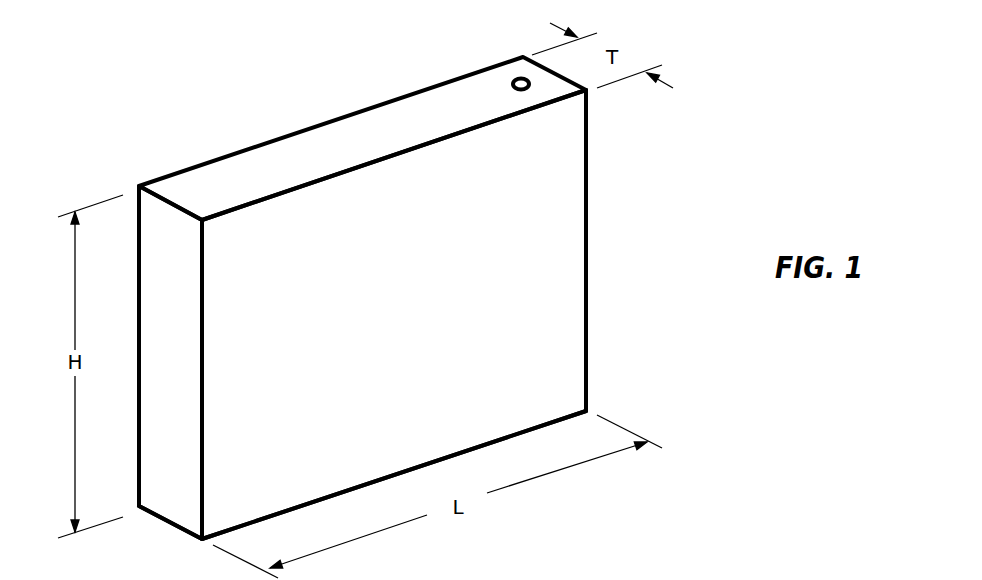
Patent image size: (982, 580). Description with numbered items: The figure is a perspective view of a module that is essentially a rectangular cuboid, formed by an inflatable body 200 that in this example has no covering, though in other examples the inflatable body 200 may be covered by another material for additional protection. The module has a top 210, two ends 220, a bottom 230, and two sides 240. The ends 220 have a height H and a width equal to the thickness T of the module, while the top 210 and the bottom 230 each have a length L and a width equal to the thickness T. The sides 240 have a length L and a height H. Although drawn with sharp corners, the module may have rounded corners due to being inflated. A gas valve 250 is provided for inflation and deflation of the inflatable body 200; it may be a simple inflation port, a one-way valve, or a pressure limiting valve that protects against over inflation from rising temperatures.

The inflatable body 200 is at (419, 318).
The top 210 is at (330, 140).
The ends 220 is at (170, 347).
The bottom 230 is at (380, 482).
The sides 240 is at (442, 307).
The gas valve 250 is at (663, 574).